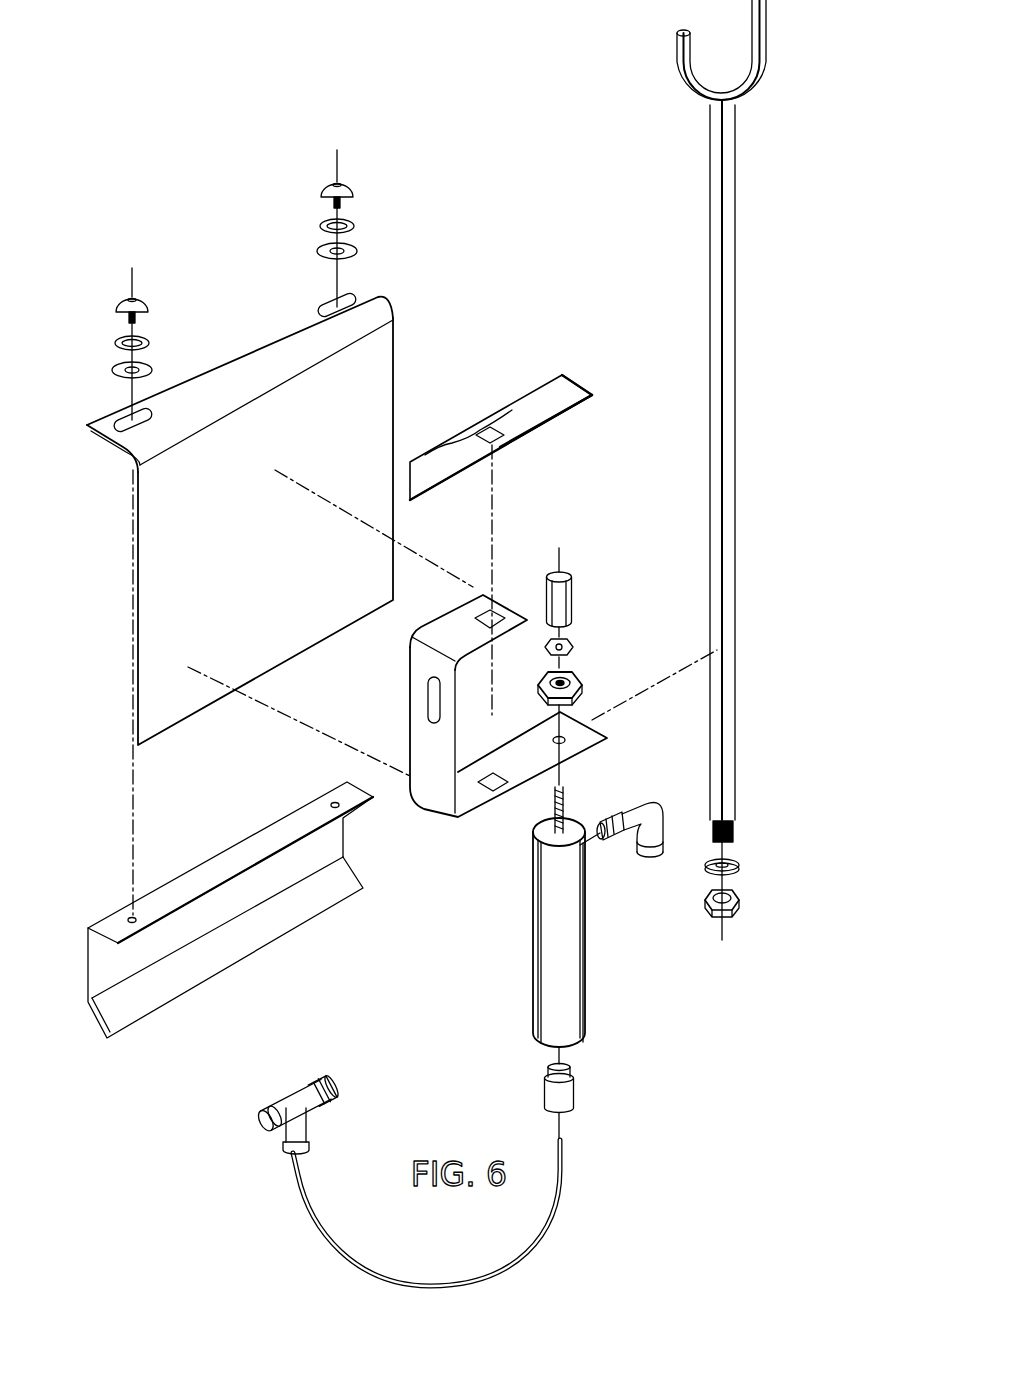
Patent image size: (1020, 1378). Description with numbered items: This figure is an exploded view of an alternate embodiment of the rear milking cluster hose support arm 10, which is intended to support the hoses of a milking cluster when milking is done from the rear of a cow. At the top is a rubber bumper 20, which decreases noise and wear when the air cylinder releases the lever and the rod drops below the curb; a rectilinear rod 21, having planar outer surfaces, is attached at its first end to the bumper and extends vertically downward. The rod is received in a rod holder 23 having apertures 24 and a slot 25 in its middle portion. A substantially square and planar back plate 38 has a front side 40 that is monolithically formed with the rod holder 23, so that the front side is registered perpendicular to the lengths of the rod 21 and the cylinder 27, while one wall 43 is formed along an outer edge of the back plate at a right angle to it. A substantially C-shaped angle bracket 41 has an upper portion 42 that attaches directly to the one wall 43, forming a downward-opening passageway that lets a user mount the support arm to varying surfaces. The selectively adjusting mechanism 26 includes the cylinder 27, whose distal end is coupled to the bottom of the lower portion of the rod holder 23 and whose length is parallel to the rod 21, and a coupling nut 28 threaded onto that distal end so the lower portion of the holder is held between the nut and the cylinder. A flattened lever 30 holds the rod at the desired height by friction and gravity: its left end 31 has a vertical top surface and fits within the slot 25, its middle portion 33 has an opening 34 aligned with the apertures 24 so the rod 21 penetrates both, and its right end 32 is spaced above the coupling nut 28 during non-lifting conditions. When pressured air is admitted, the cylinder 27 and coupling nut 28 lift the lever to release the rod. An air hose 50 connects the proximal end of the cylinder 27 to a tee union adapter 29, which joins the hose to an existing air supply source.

The rear milking cluster hose support arm 10 is at (252, 165).
The rubber bumper 20 is at (735, 103).
The rectilinear rod 21 is at (730, 255).
The rod holder 23 is at (433, 783).
The apertures 24 is at (505, 617).
The slot 25 is at (433, 707).
The selectively adjusting mechanism 26 is at (590, 662).
The cylinder 27 is at (570, 942).
The coupling nut 28 is at (578, 688).
The tee union adapter 29 is at (300, 1109).
The flattened lever 30 is at (717, 180).
The left end of the lever 31 is at (437, 457).
The right end of the lever 32 is at (567, 392).
The middle portion of the lever 33 is at (510, 426).
The opening 34 is at (488, 428).
The back plate 38 is at (400, 300).
The front side of the back plate 40 is at (378, 363).
The C-shaped angle bracket 41 is at (217, 840).
The upper portion of the angle bracket 42 is at (253, 850).
The one wall 43 is at (215, 363).
The air hose 50 is at (564, 1169).